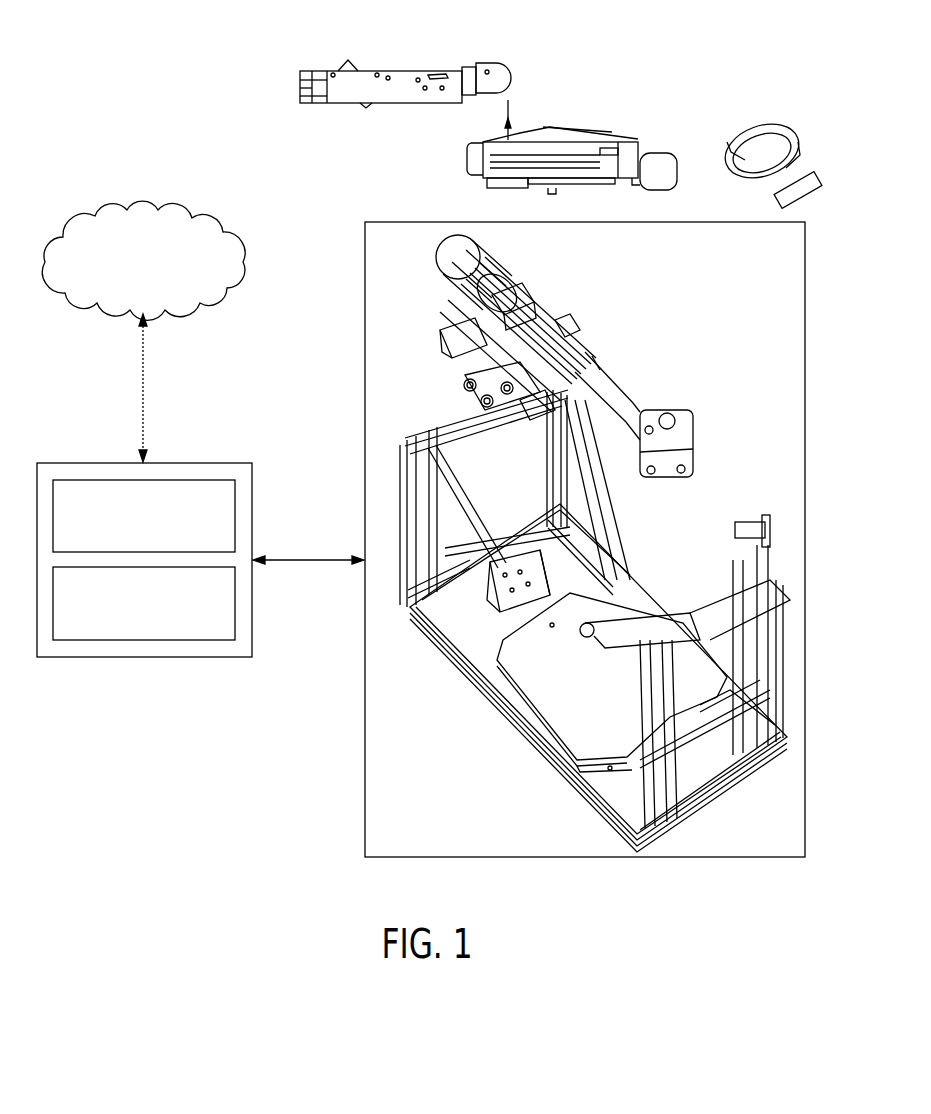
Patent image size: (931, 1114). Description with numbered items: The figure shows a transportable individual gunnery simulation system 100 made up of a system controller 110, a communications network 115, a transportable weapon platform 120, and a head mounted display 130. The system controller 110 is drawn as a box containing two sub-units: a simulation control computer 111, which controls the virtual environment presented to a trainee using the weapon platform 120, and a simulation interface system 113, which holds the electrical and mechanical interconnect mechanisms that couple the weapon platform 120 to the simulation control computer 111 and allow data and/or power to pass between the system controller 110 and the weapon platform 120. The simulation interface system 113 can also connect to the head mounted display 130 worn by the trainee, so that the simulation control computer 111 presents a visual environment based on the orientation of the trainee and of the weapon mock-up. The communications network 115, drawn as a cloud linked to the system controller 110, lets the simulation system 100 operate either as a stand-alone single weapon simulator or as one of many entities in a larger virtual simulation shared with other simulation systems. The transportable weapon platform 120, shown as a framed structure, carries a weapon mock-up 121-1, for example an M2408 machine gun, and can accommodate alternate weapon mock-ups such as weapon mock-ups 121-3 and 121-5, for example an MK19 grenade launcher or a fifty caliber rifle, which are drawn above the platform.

The transportable individual gunnery simulation system 100 is at (105, 59).
The system controller 110 is at (90, 462).
The simulation control computer 111 is at (203, 480).
The simulation interface system 113 is at (203, 641).
The communications network 115 is at (130, 273).
The transportable weapon platform 120 is at (364, 806).
The weapon mock-up 121-1 is at (575, 356).
The weapon mock-up 121-3 is at (467, 172).
The weapon mock-up 121-5 is at (300, 97).
The head mounted display 130 is at (748, 127).